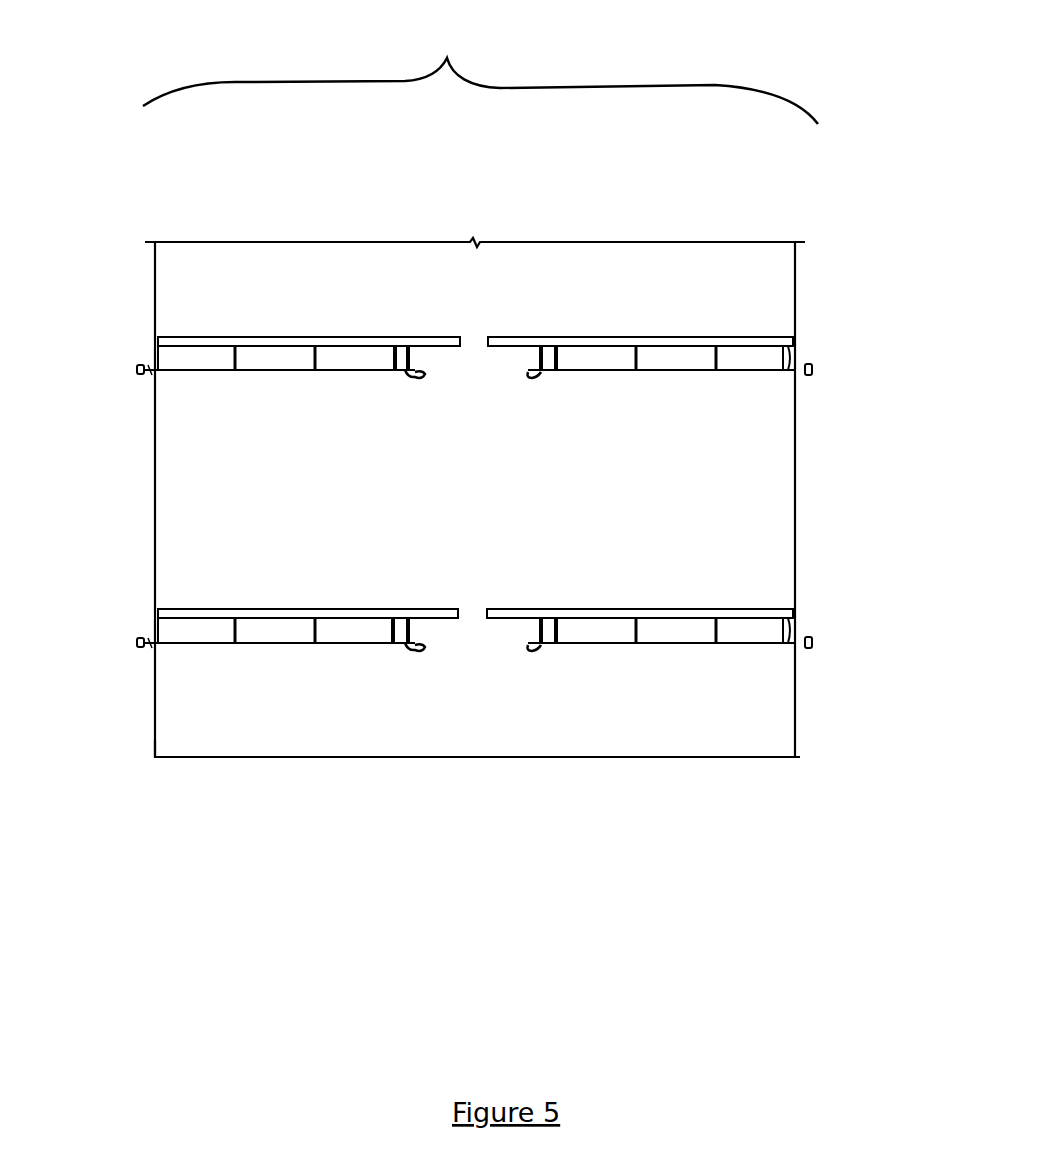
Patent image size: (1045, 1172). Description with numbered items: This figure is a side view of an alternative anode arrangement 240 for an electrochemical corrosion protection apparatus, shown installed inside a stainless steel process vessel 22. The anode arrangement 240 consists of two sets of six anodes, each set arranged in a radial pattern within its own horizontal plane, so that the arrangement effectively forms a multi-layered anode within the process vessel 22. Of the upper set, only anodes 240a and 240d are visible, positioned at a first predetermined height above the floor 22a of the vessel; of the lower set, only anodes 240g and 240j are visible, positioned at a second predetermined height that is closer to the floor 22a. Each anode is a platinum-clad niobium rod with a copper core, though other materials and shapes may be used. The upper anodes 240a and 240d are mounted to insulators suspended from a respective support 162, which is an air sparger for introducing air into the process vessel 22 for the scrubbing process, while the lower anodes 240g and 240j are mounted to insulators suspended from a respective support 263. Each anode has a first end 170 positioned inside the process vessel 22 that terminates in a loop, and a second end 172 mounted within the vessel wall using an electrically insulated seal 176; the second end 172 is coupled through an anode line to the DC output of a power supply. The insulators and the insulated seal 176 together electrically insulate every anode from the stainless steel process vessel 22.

The anode arrangement 240 is at (480, 71).
The stainless steel process vessel 22 is at (433, 497).
The floor 22a is at (215, 752).
The second end 172 is at (139, 350).
The electrically insulated seal 176 is at (150, 372).
The first end 170 is at (536, 388).
The support 162 is at (745, 337).
The support 263 is at (745, 609).
The anode 240a is at (285, 372).
The anode 240d is at (665, 370).
The anode 240g is at (285, 645).
The anode 240j is at (677, 643).